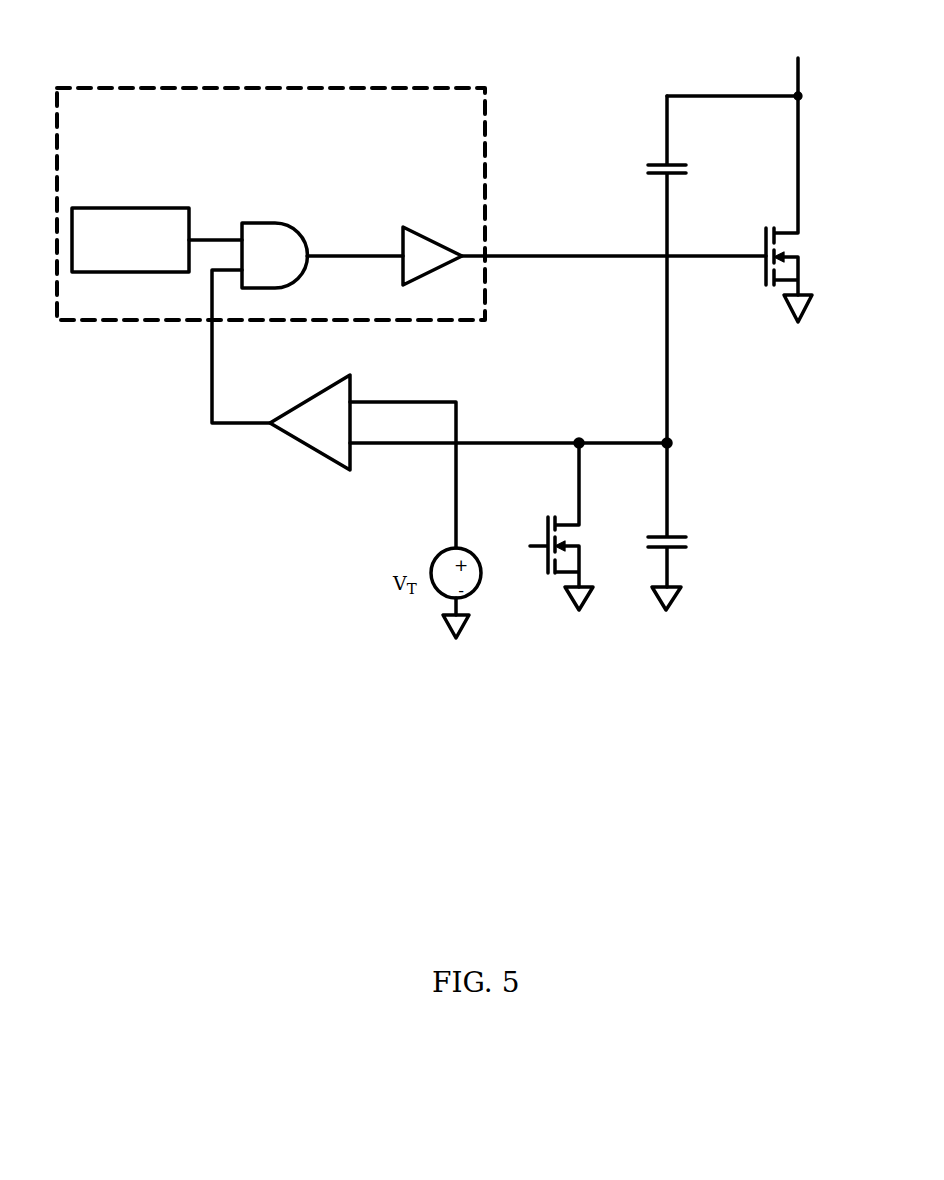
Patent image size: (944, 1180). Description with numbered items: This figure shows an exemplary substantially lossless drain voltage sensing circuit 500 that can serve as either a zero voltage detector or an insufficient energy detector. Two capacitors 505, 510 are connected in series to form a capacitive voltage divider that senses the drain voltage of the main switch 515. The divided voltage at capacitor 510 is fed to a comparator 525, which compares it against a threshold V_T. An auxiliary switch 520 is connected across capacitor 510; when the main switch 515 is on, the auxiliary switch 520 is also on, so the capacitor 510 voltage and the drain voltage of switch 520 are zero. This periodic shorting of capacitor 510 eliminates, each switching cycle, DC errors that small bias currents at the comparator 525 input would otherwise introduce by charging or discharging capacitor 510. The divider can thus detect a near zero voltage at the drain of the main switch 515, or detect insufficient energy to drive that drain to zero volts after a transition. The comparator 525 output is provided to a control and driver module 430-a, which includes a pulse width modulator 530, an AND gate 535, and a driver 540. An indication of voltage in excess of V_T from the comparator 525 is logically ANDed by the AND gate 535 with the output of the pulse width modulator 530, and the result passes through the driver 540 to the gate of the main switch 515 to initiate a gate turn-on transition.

The control and driver module 430-a is at (445, 88).
The drain voltage sensing circuit 500 is at (565, 797).
The capacitor 505 is at (650, 165).
The capacitor 510 is at (655, 537).
The main switch 515 is at (796, 257).
The auxiliary switch 520 is at (550, 520).
The comparator 525 is at (318, 393).
The pulse width modulator (PWM) 530 is at (145, 208).
The AND gate 535 is at (265, 223).
The driver 540 is at (403, 232).